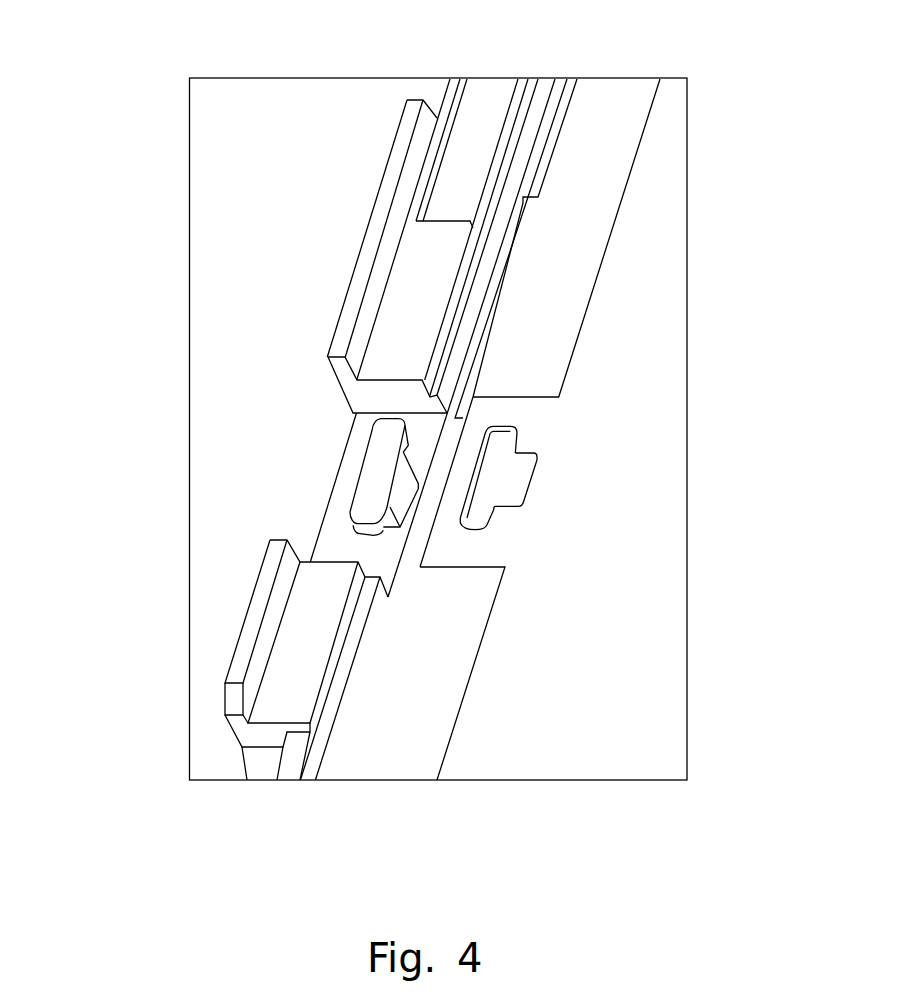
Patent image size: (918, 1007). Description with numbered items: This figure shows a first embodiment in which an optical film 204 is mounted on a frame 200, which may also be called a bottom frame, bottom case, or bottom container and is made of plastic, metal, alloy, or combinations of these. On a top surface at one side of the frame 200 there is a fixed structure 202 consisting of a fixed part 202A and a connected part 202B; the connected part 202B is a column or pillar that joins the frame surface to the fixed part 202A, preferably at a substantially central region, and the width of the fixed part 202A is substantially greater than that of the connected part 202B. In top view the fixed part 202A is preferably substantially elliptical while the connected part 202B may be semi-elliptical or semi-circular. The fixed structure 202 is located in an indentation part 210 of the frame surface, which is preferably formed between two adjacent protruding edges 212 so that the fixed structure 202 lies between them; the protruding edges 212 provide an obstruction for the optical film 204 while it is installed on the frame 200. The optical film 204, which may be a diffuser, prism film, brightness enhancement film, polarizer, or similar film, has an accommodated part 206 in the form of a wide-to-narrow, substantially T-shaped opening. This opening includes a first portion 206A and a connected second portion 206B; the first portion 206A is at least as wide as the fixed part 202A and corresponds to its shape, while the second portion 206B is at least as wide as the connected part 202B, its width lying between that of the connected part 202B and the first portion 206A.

The frame 200 is at (441, 398).
The fixed structure 202 is at (213, 478).
The fixed part 202A is at (377, 453).
The connected part 202B is at (403, 496).
The optical film 204 is at (662, 594).
The accommodated part 206 is at (667, 484).
The first portion 206A is at (503, 443).
The second portion 206B is at (520, 481).
The indentation part 210 is at (441, 419).
The protruding edge 212 is at (418, 253).